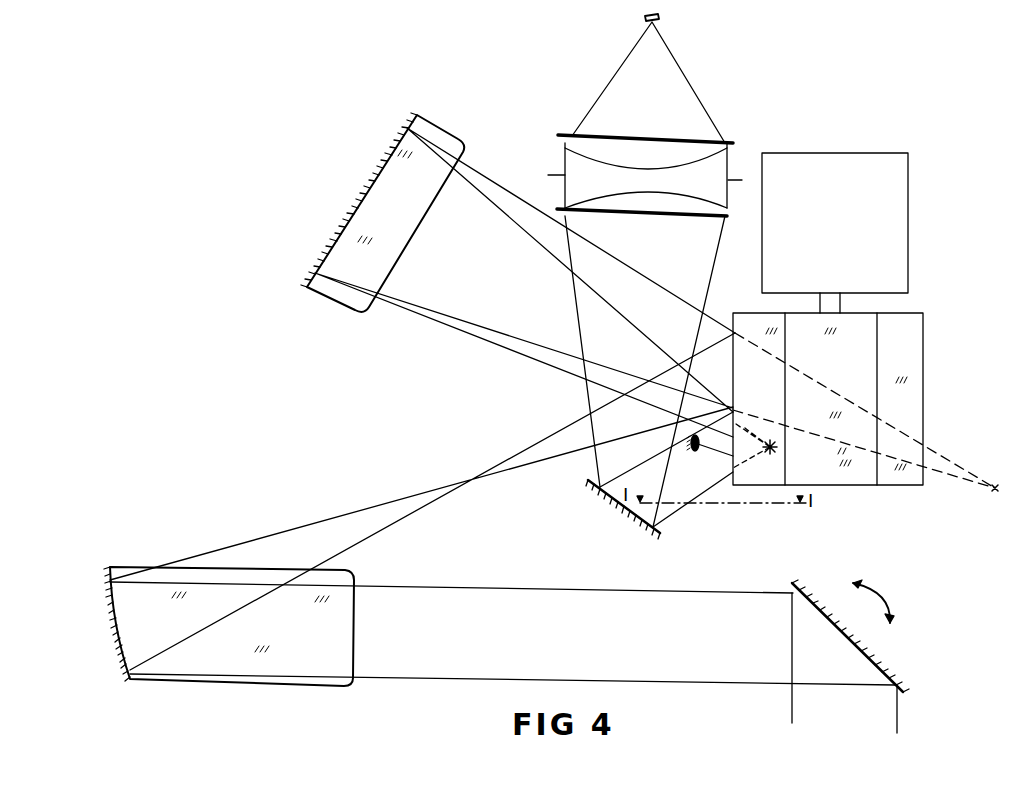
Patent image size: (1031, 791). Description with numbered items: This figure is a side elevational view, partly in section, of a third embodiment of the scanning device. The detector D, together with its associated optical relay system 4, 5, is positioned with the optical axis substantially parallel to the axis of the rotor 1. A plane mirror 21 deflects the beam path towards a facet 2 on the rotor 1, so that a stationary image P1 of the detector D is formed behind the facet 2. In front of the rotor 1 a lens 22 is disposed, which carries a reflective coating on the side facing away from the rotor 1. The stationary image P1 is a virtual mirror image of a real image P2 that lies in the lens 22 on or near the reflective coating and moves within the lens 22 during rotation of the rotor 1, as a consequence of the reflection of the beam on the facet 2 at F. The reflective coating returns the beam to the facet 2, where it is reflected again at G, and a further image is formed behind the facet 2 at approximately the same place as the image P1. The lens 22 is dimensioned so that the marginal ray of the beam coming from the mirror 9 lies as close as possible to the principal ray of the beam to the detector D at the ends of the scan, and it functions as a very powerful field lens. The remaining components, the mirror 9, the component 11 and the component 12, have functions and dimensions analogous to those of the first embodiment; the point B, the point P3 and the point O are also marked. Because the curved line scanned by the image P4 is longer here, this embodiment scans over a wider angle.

The detector D is at (645, 20).
The optical relay system 5 is at (733, 143).
The optical relay system 4 is at (660, 318).
The mirror 9 is at (320, 255).
The rotor 1 is at (838, 485).
The facet 2 is at (735, 324).
The point B is at (735, 363).
The point of second reflection on facet G is at (735, 419).
The point of first reflection on facet F is at (768, 449).
The stationary image P1 is at (772, 449).
The real image P2 is at (689, 445).
The image point P3 is at (993, 492).
The image P4 is at (477, 478).
The plane mirror 21 is at (632, 519).
The lens 22 is at (697, 452).
The component 11 is at (133, 679).
The component 12 is at (869, 656).
The pivot point O is at (851, 636).